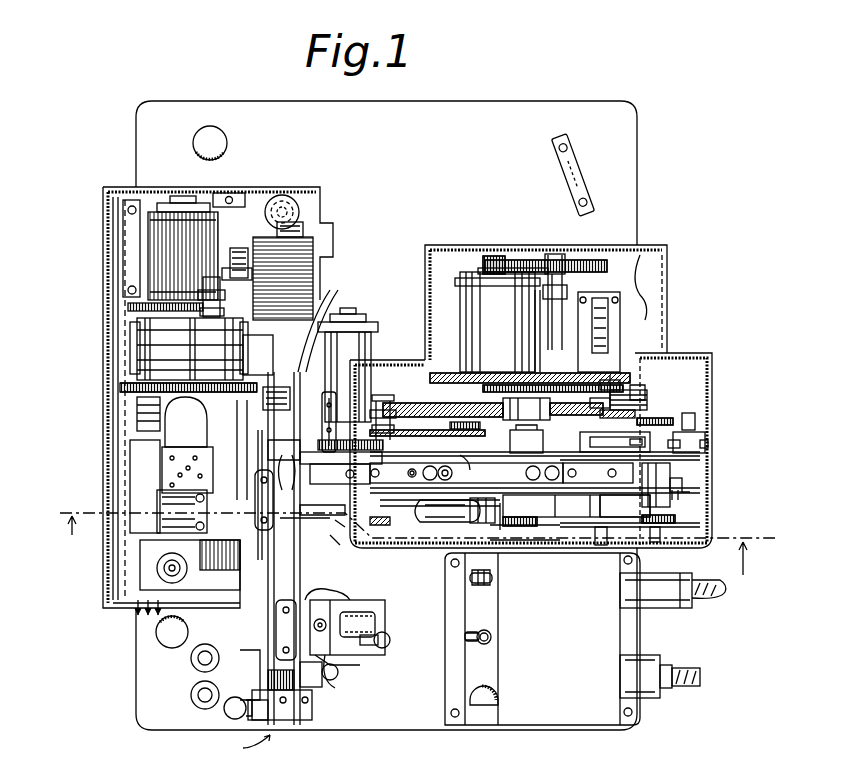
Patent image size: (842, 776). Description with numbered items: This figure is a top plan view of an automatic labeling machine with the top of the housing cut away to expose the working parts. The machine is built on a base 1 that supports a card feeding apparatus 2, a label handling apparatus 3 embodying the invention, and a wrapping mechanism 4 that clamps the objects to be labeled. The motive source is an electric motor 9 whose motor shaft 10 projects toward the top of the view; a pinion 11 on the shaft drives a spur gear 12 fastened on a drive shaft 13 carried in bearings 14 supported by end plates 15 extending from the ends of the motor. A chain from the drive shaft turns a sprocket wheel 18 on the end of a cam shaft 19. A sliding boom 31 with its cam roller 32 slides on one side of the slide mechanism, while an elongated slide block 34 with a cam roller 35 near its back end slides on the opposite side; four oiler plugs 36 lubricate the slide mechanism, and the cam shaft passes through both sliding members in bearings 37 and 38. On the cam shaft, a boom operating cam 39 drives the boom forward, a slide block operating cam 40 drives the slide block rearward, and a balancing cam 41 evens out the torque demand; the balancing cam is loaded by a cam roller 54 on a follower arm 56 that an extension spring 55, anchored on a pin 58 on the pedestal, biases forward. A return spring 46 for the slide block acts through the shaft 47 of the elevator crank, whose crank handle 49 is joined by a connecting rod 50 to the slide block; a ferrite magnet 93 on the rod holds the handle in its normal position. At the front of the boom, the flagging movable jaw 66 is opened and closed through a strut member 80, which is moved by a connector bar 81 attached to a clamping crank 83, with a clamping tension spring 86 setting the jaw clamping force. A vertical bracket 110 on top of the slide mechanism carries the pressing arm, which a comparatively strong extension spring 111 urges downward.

The base 1 is at (610, 106).
The card feeding apparatus 2 is at (417, 638).
The label handling apparatus 3 is at (398, 350).
The wrapping mechanism 4 is at (93, 294).
The electric motor 9 is at (470, 298).
The motor shaft 10 is at (485, 270).
The pinion 11 is at (490, 258).
The spur gear 12 is at (532, 262).
The drive shaft 13 is at (588, 300).
The bearings 14 is at (562, 290).
The end plates 15 is at (537, 335).
The sprocket wheel 18 is at (455, 372).
The cam shaft 19 is at (500, 392).
The sliding boom 31 is at (345, 545).
The cam roller 32 is at (498, 548).
The slide block 34 is at (705, 455).
The cam roller 35 is at (697, 420).
The oiler plugs 36 is at (447, 468).
The bearing 37 is at (542, 503).
The bearing 38 is at (543, 445).
The boom operating cam 39 is at (675, 518).
The slide block operating cam 40 is at (670, 418).
The balancing cam 41 is at (640, 398).
The return spring 46 is at (432, 425).
The shaft 47 is at (300, 480).
The crank handle 49 is at (272, 453).
The connecting rod 50 is at (479, 467).
The cam roller 54 is at (640, 395).
The extension spring 55 is at (425, 403).
The follower arm 56 is at (648, 410).
The pin 58 is at (382, 398).
The flagging movable jaw 66 is at (300, 505).
The strut member 80 is at (320, 515).
The connector bar 81 is at (428, 510).
The clamping crank 83 is at (455, 512).
The clamping tension spring 86 is at (365, 548).
The ferrite magnet 93 is at (349, 425).
The vertical bracket 110 is at (460, 477).
The extension spring 111 is at (397, 476).